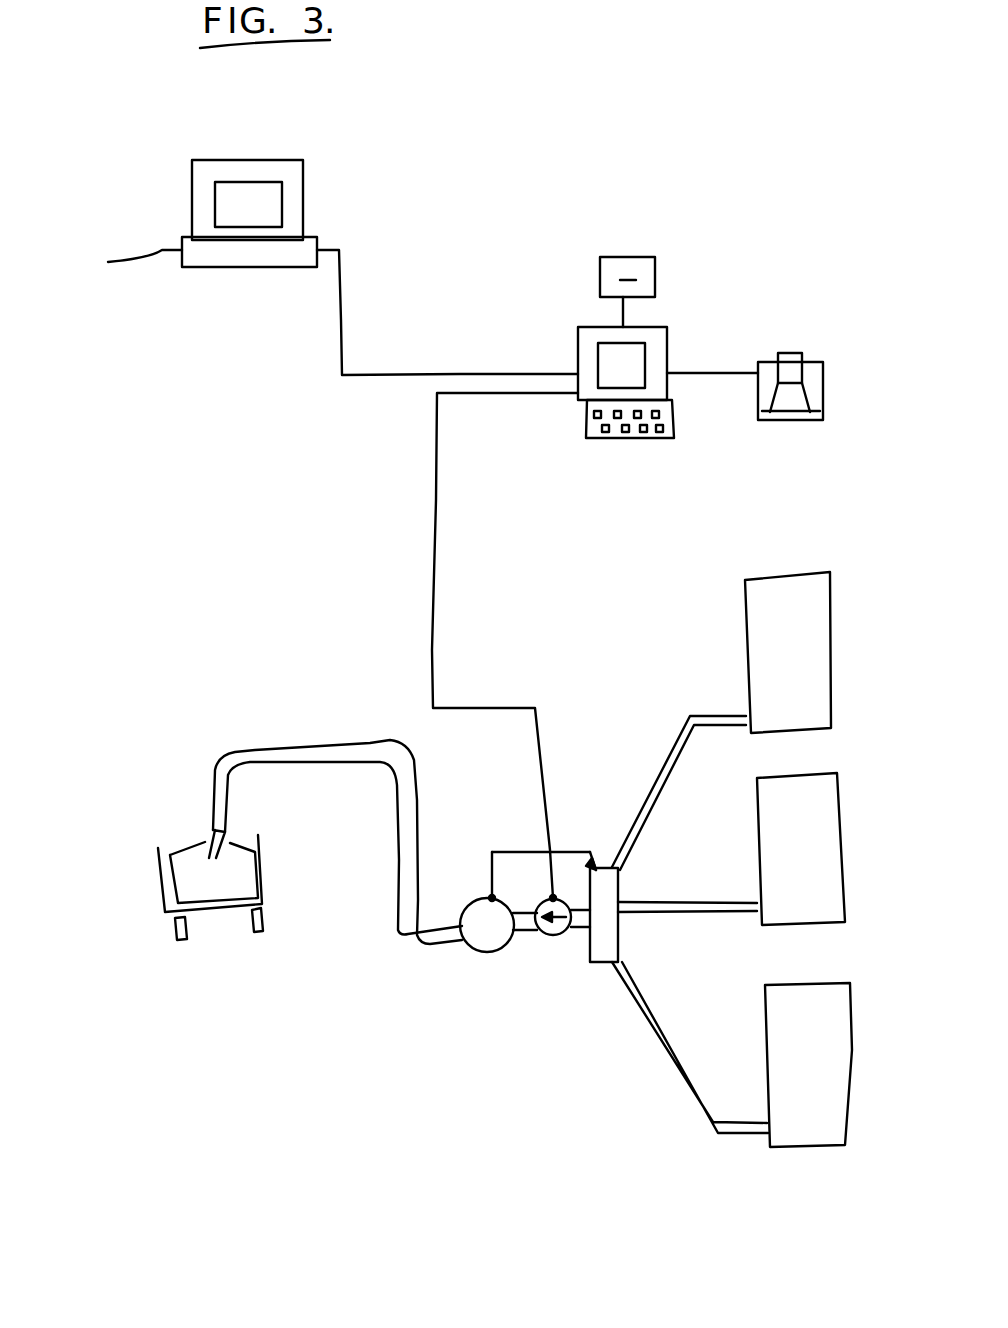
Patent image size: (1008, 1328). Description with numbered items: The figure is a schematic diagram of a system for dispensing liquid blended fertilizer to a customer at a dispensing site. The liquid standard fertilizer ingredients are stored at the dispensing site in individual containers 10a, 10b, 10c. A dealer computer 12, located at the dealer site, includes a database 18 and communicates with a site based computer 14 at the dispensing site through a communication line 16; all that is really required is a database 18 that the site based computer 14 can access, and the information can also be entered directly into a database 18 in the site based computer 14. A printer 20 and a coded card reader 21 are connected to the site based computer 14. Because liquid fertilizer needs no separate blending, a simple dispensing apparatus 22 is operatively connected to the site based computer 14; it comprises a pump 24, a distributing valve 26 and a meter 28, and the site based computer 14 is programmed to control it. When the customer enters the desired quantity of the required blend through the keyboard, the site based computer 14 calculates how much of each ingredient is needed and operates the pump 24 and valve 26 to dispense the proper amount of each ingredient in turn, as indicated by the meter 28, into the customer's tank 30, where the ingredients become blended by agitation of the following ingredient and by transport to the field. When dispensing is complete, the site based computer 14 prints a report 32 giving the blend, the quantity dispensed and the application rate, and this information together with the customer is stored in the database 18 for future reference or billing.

The individual container 10a is at (831, 655).
The individual container 10b is at (845, 875).
The individual container 10c is at (848, 1112).
The dealer computer 12 is at (303, 173).
The site based computer 14 is at (667, 335).
The communication line 16 is at (342, 305).
The database 18 is at (125, 269).
The printer 20 is at (823, 382).
The coded card reader 21 is at (652, 255).
The dispensing apparatus 22 is at (585, 838).
The pump 24 is at (550, 936).
The distributing valve 26 is at (597, 962).
The meter 28 is at (470, 950).
The customer's tank 30 is at (187, 845).
The report 32 is at (790, 353).